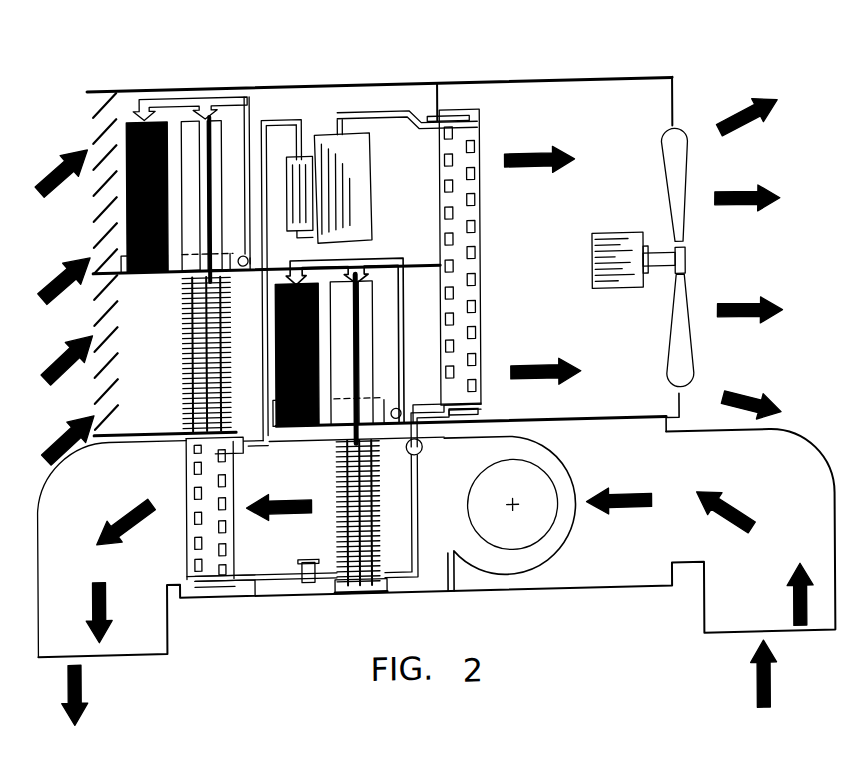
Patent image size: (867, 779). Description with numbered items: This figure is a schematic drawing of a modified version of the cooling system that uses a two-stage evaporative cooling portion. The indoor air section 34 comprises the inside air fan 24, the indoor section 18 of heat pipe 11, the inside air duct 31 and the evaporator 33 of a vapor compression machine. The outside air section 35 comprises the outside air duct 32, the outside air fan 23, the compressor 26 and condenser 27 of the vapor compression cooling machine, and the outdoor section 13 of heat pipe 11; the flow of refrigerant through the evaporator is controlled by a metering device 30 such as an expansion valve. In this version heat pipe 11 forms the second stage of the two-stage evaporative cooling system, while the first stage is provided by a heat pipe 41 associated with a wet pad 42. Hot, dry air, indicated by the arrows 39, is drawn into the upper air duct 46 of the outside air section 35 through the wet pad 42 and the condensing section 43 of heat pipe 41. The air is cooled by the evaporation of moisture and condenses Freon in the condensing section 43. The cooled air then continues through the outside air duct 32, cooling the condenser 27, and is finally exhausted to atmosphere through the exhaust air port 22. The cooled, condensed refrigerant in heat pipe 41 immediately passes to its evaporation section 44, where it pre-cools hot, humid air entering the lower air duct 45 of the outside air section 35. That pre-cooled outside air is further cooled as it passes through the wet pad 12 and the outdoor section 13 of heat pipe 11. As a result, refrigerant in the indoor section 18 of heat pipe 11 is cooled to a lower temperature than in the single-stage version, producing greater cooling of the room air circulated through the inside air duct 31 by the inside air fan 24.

The heat pipe 11 is at (395, 415).
The wet pad 12 is at (277, 382).
The outdoor section of heat pipe 13 is at (360, 300).
The indoor section of heat pipe 18 is at (368, 551).
The exhaust air port 22 is at (686, 401).
The outside air fan 23 is at (680, 185).
The inside air fan 24 is at (557, 541).
The compressor 26 is at (358, 203).
The condenser 27 is at (468, 220).
The metering device 30 is at (303, 565).
The inside air duct 31 is at (743, 481).
The outside air duct 32 is at (560, 122).
The evaporator 33 is at (207, 529).
The indoor air section 34 is at (357, 614).
The outside air section 35 is at (442, 70).
The arrows 39 is at (56, 159).
The heat pipe 41 is at (182, 293).
The wet pad 42 is at (127, 181).
The condensing section of heat pipe 43 is at (212, 135).
The evaporation section of heat pipe 44 is at (182, 390).
The lower air duct 45 is at (143, 361).
The upper air duct 46 is at (301, 105).